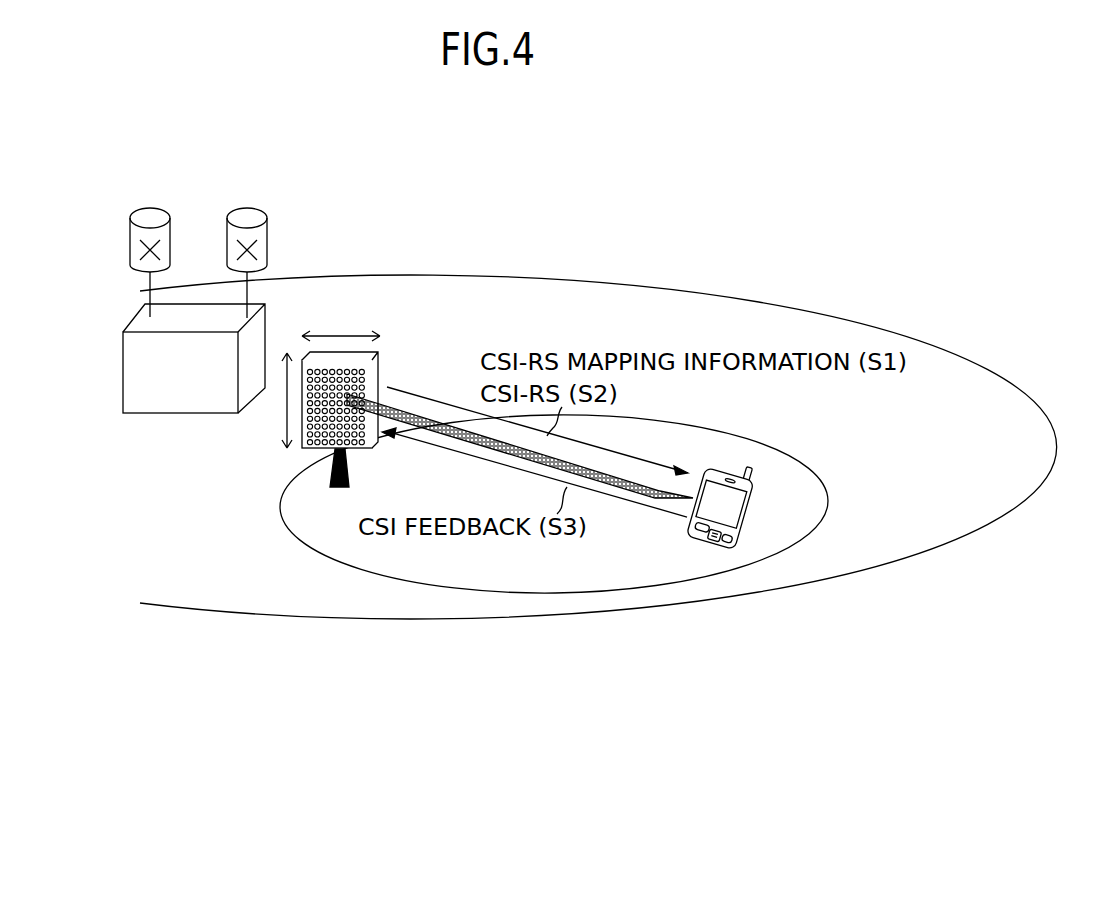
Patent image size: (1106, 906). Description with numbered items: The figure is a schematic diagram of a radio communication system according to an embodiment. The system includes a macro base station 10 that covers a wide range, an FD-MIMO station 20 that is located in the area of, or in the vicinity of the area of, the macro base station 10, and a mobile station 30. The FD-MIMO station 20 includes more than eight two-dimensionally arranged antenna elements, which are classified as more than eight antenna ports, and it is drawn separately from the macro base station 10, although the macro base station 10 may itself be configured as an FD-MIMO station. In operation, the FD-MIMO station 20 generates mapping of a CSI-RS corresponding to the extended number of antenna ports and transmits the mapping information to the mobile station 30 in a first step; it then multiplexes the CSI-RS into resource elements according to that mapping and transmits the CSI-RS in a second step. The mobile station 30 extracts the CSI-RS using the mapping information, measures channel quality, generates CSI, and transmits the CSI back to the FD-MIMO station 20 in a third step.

The macro base station 10 is at (178, 413).
The FD-MIMO station 20 is at (380, 360).
The mobile station 30 is at (754, 509).